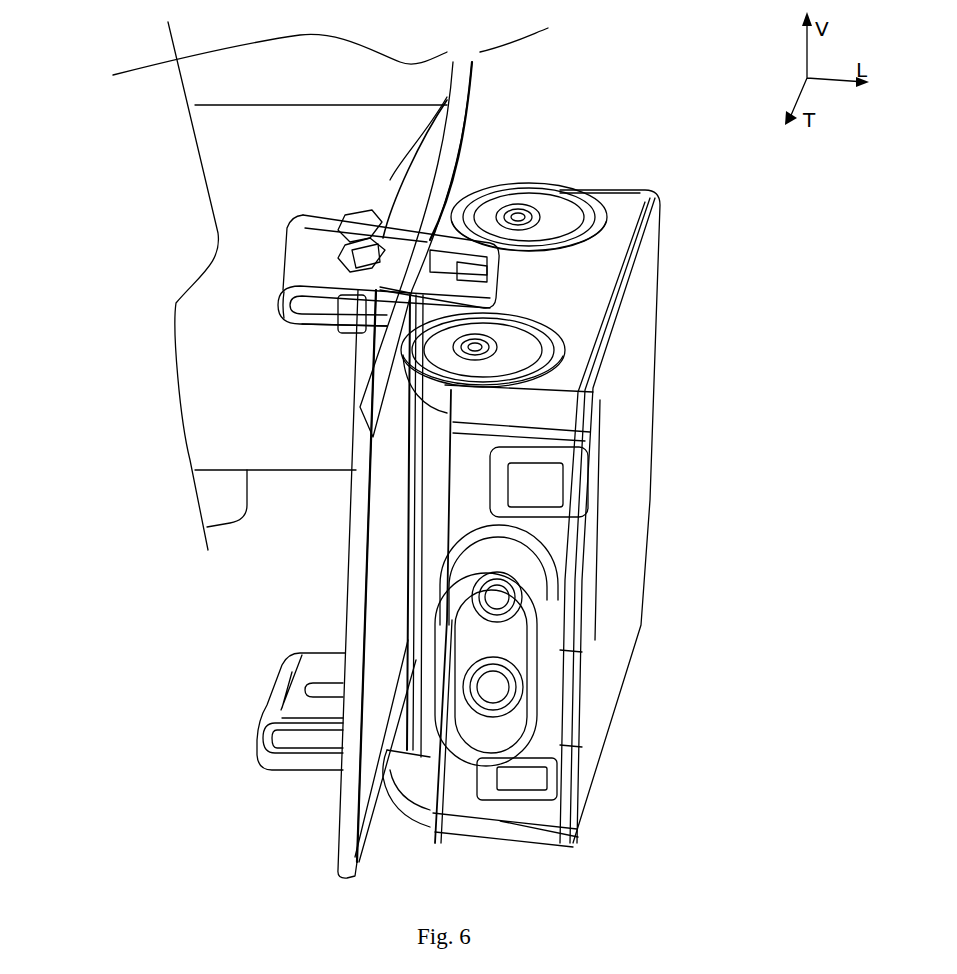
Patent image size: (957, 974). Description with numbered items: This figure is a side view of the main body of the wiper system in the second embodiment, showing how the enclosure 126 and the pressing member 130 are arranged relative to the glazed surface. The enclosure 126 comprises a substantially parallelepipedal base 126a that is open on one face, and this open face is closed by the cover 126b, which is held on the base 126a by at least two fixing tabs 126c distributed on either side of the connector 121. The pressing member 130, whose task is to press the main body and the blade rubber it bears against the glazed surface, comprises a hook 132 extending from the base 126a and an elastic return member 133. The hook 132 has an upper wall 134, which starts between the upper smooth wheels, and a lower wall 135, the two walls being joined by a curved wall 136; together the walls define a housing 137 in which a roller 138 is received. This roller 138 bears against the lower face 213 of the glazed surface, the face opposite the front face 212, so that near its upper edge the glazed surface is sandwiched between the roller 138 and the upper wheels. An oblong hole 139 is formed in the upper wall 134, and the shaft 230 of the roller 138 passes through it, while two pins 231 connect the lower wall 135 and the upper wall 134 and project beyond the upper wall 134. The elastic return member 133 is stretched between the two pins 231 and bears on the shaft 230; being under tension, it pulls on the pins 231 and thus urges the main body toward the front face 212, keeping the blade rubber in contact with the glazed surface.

The connector 121 is at (540, 652).
The enclosure 126 is at (712, 362).
The base 126a is at (620, 200).
The cover 126b is at (627, 490).
The fixing tabs 126c is at (545, 517).
The pressing member 130 is at (274, 316).
The hook 132 is at (395, 290).
The elastic return member 133 is at (325, 253).
The upper wall 134 is at (357, 220).
The lower wall 135 is at (307, 333).
The curved wall 136 is at (278, 291).
The housing 137 is at (285, 311).
The roller 138 is at (335, 340).
The oblong hole 139 is at (453, 62).
The front face 212 is at (505, 137).
The lower face 213 is at (314, 537).
The shaft 230 is at (357, 233).
The pins 231 is at (378, 236).